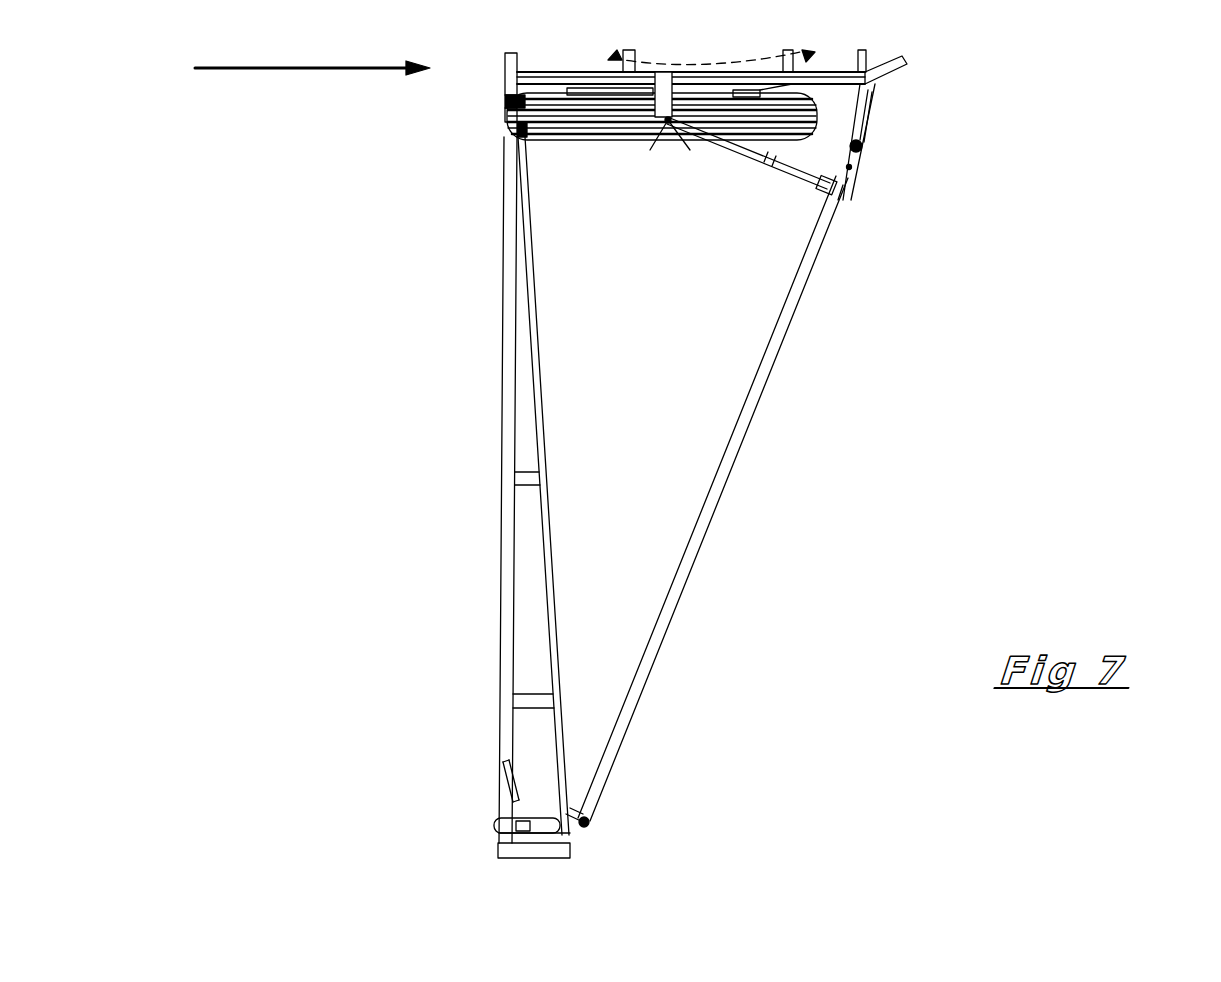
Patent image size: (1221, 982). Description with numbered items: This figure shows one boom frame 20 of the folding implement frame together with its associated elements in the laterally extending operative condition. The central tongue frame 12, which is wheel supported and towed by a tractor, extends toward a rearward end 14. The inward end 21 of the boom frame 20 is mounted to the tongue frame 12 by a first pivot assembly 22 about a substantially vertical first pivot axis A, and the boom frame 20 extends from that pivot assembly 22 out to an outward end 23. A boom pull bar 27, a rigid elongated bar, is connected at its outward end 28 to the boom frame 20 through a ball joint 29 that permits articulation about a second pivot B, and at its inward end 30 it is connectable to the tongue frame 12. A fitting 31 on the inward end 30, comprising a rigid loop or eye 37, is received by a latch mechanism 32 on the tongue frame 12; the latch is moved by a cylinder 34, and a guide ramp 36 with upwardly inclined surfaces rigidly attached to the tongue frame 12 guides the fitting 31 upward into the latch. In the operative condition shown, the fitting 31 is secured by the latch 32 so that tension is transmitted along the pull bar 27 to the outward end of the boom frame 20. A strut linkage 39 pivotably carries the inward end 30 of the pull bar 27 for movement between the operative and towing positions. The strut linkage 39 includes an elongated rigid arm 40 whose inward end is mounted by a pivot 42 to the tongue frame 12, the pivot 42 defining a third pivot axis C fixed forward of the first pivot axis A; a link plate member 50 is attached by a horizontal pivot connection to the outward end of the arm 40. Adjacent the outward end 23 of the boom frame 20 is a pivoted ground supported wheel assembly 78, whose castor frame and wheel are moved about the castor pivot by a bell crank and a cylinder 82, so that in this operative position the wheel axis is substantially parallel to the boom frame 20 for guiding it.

The tongue frame 12 is at (897, 53).
The rearward end 14 is at (505, 67).
The boom frame 20 is at (423, 588).
The inward end 21 is at (502, 316).
The first pivot assembly 22 is at (505, 105).
The outward end 23 is at (520, 856).
The boom pull bar 27 is at (768, 394).
The outward end 28 is at (597, 810).
The ball joint 29 is at (595, 828).
The inward end 30 is at (832, 195).
The fitting 31 is at (852, 180).
The latch mechanism 32 is at (882, 124).
The cylinder 34 is at (873, 96).
The guide ramp 36 is at (864, 134).
The loop or eye 37 is at (860, 153).
The strut linkage 39 is at (757, 168).
The rigid arm 40 is at (800, 170).
The pivot 42 is at (660, 128).
The link plate member 50 is at (824, 192).
The ground supported wheel assembly 78 is at (482, 829).
The cylinder 82 is at (503, 782).
The first pivot axis A is at (505, 130).
The second pivot B is at (590, 832).
The third pivot axis C is at (678, 130).